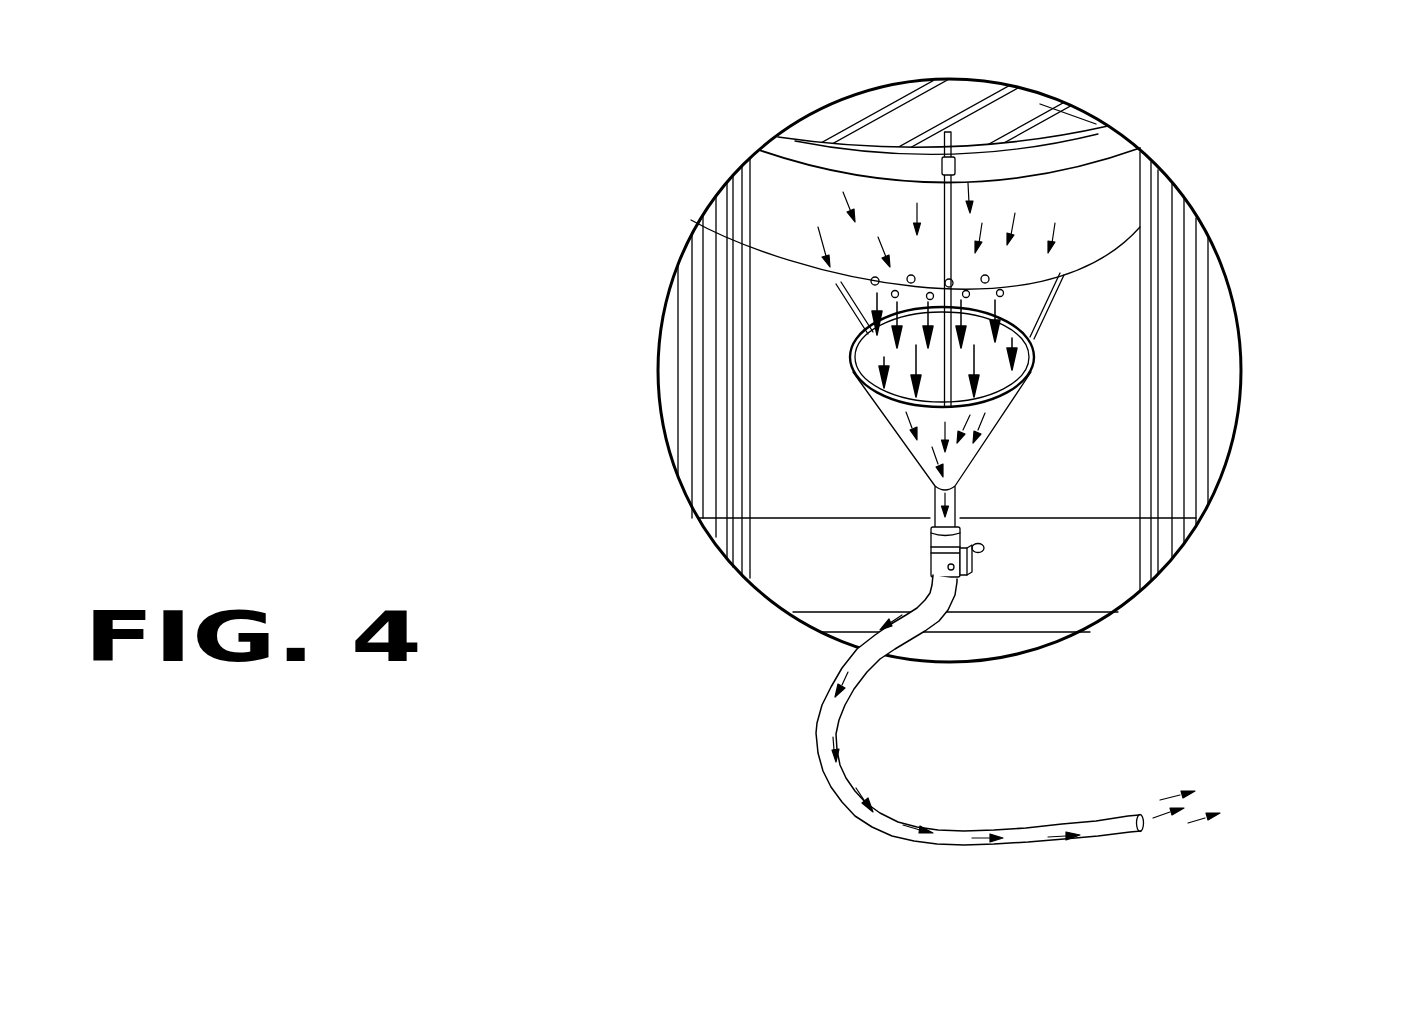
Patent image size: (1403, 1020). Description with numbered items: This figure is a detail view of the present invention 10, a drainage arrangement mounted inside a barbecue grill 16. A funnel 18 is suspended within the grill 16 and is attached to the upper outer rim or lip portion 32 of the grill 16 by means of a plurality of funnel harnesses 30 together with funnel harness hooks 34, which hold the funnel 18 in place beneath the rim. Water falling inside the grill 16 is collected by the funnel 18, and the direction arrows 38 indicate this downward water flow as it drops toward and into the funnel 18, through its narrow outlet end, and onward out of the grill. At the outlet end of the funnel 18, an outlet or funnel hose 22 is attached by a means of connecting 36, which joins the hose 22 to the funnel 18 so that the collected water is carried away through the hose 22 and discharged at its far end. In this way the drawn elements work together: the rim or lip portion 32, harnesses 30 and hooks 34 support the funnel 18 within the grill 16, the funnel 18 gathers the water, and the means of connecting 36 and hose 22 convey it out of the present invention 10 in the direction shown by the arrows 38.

The present invention 10 is at (1180, 121).
The barbecue grill 16 is at (1113, 170).
The funnel 18 is at (993, 422).
The outlet or funnel hose 22 is at (1087, 822).
The funnel harness 30 is at (1043, 310).
The upper outer rim or lip portion 32 is at (810, 150).
The funnel harness hook 34 is at (953, 178).
The means of connecting 36 is at (982, 560).
The direction arrows 38 is at (820, 237).